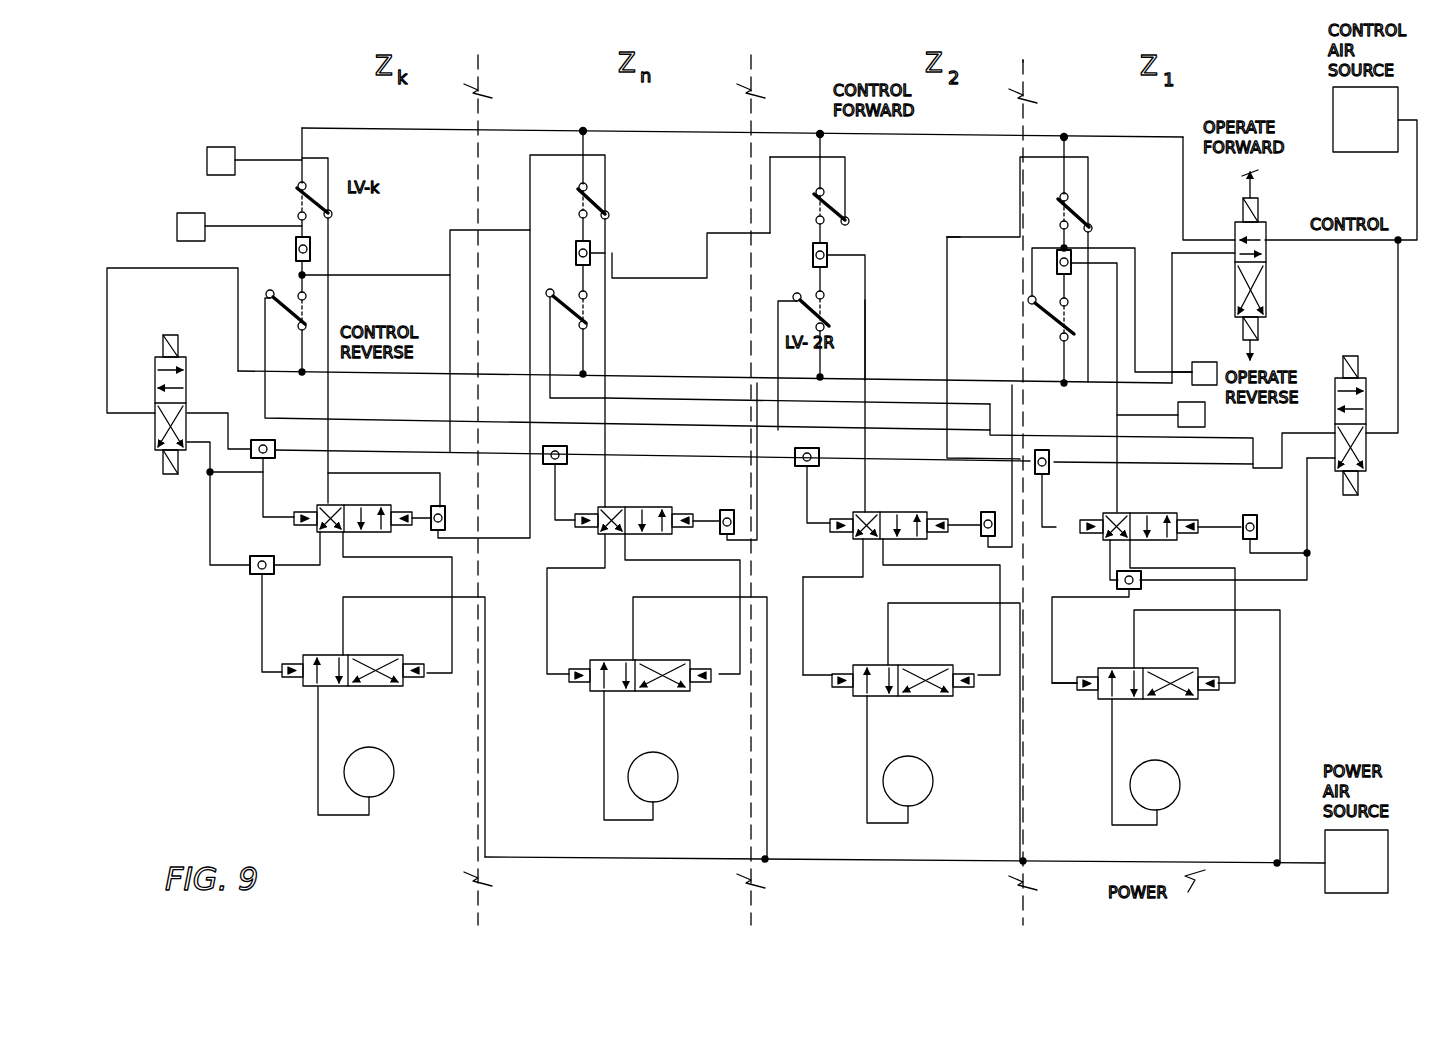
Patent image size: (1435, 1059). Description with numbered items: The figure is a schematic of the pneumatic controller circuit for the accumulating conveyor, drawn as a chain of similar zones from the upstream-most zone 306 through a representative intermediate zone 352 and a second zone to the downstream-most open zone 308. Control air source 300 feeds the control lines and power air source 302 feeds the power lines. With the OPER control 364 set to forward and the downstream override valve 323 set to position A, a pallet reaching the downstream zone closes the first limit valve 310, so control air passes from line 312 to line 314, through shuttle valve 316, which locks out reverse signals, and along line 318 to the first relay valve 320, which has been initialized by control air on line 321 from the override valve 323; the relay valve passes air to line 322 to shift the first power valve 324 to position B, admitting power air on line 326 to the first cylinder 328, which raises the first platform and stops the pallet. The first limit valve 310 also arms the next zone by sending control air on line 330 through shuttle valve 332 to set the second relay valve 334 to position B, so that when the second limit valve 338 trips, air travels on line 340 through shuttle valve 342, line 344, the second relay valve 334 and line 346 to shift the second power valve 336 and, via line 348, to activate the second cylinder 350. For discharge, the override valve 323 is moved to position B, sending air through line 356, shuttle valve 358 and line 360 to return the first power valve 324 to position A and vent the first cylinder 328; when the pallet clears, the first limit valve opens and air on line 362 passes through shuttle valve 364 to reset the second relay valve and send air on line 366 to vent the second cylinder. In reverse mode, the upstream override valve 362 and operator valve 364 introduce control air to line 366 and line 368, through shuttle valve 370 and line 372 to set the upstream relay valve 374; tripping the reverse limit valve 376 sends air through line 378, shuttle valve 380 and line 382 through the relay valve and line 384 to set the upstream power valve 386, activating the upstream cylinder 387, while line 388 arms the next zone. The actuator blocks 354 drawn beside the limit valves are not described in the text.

The control air source 300 is at (1341, 260).
The power air source 302 is at (936, 861).
The zone Zk 306 is at (403, 118).
The zone Z1 308 is at (1185, 110).
The limit valve LV-1 310 is at (1080, 206).
The line 312 is at (812, 160).
The line 314 is at (1072, 240).
The shuttle valve 316 is at (1072, 270).
The line 318 is at (1112, 324).
The relay valve RV-1 320 is at (1178, 510).
The line 321 is at (1058, 527).
The line 322 is at (1240, 655).
The override valve OVR1 323 is at (1335, 420).
The power valve PV-1 324 is at (1137, 660).
The line 326 is at (1132, 636).
The cylinder M1 328 is at (1180, 775).
The line 330 is at (1003, 242).
The shuttle valve 332 is at (810, 466).
The relay valve RV-2 334 is at (918, 540).
The power valve PV-2 336 is at (912, 698).
The limit valve LV-2 338 is at (840, 188).
The line 340 is at (826, 226).
The shuttle valve 342 is at (813, 258).
The line 344 is at (866, 336).
The line 346 is at (985, 562).
The line 348 is at (866, 748).
The cylinder M2 350 is at (934, 775).
The zone Zn 352 is at (678, 103).
The limit switch actuators 354 is at (203, 163).
The line 356 is at (1307, 545).
The shuttle valve 358 is at (1115, 590).
The line 360 is at (1065, 700).
The line 362 is at (95, 425).
The OPER control 364 is at (990, 512).
The line 366 is at (398, 372).
The line 368 is at (238, 412).
The shuttle valve 370 is at (266, 440).
The line 372 is at (270, 478).
The relay valve RV-k 374 is at (373, 531).
The reverse limit valve LVR-k 376 is at (312, 322).
The line 378 is at (299, 274).
The shuttle valve 380 is at (313, 242).
The line 382 is at (342, 396).
The line 384 is at (455, 570).
The power valve PV-k 386 is at (322, 655).
The cylinder Mk 387 is at (393, 775).
The line 388 is at (428, 275).